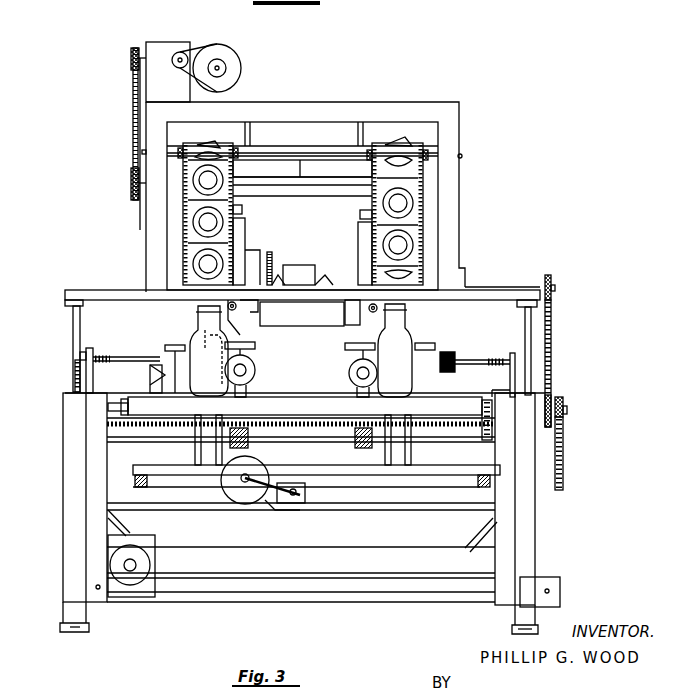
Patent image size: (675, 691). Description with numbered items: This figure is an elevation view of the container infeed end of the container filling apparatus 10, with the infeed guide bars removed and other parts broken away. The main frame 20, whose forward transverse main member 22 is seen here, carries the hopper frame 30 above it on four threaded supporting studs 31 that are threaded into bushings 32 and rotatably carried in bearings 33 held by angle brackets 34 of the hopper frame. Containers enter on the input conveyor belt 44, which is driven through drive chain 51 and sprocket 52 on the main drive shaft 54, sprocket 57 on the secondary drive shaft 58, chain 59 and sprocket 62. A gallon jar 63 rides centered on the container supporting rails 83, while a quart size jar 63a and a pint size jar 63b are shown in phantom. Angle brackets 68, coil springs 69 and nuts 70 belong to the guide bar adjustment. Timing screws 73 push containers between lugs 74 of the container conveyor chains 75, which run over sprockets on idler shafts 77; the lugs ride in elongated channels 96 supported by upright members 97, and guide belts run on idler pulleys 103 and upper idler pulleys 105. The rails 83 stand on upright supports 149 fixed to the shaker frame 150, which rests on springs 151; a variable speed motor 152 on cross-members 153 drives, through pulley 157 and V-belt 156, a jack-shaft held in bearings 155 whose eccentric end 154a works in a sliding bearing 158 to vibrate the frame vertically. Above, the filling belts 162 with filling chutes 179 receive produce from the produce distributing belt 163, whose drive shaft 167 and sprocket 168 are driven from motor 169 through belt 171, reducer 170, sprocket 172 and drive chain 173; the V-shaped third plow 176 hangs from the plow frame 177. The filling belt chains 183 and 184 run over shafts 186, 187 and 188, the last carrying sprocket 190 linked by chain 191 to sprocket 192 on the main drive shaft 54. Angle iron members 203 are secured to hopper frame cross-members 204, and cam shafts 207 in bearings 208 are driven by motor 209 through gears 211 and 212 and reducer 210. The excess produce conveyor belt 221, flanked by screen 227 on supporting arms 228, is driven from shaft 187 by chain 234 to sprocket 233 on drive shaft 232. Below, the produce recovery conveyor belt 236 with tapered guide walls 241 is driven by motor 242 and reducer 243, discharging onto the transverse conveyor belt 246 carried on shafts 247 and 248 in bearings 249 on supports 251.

The container filling apparatus 10 is at (55, 503).
The main frame 20 is at (65, 452).
The transverse main member 22 is at (108, 413).
The hopper frame 30 is at (437, 102).
The threaded supporting stud 31 is at (75, 330).
The bushing 32 is at (70, 392).
The bearing 33 is at (70, 302).
The angle bracket 34 is at (105, 290).
The conveyor belt 44 is at (302, 417).
The drive chain 51 is at (565, 472).
The sprocket 52 is at (564, 400).
The main drive shaft 54 is at (568, 410).
The sprocket 57 is at (479, 478).
The secondary drive shaft 58 is at (470, 465).
The chain 59 is at (497, 420).
The sprocket 62 is at (482, 410).
The container 63 is at (408, 329).
The quart size jar 63a is at (200, 335).
The pint size jar 63b is at (202, 348).
The angle bracket 68 is at (78, 375).
The coil spring 69 is at (108, 357).
The nut 70 is at (85, 355).
The timing screw 73 is at (350, 372).
The lug 74 is at (420, 352).
The container conveyor chain 75 is at (165, 365).
The idler shaft 77 is at (472, 360).
The container supporting rail 83 is at (245, 393).
The elongated channel 96 is at (474, 378).
The upright member 97 is at (450, 393).
The idler pulley 103 is at (424, 355).
The upper idler pulley 105 is at (377, 333).
The upright support 149 is at (196, 448).
The shaker frame 150 is at (385, 482).
The spring 151 is at (133, 473).
The variable speed motor 152 is at (237, 495).
The cross-member 153 is at (290, 512).
The eccentric end 154a is at (290, 498).
The bearing 155 is at (300, 495).
The V-belt 156 is at (258, 488).
The pulley 157 is at (238, 478).
The bearing 158 is at (296, 493).
The filling belt 162 is at (230, 145).
The produce distributing belt 163 is at (340, 195).
The drive shaft 167 is at (138, 185).
The sprocket 168 is at (133, 190).
The motor 169 is at (232, 52).
The reducer 170 is at (165, 48).
The belt 171 is at (185, 55).
The sprocket 172 is at (130, 55).
The drive chain 173 is at (133, 80).
The third plow 176 is at (280, 165).
The plow frame 177 is at (250, 137).
The filling chute 179 is at (413, 204).
The chain 183 is at (185, 227).
The chain 184 is at (233, 185).
The shaft 186 is at (461, 156).
The shaft 187 is at (135, 300).
The shaft 188 is at (480, 288).
The sprocket 190 is at (553, 280).
The chain 191 is at (552, 352).
The sprocket 192 is at (553, 428).
The angle iron member 203 is at (345, 318).
The hopper frame cross-member 204 is at (420, 297).
The cam shaft 207 is at (140, 290).
The bearing 208 is at (215, 302).
The motor 209 is at (257, 250).
The reducer 210 is at (312, 283).
The gear 211 is at (272, 258).
The gear 212 is at (292, 265).
The excess produce conveyor belt 221 is at (312, 320).
The screen 227 is at (243, 228).
The supporting arm 228 is at (245, 210).
The drive shaft 232 is at (222, 300).
The sprocket 233 is at (245, 320).
The chain 234 is at (252, 315).
The produce recovery conveyor belt 236 is at (340, 572).
The tapered guide wall 241 is at (108, 522).
The motor 242 is at (131, 566).
The reducer 243 is at (148, 530).
The transverse conveyor belt 246 is at (355, 580).
The shaft 247 is at (550, 590).
The shaft 248 is at (96, 587).
The bearing 249 is at (540, 585).
The support 251 is at (95, 556).